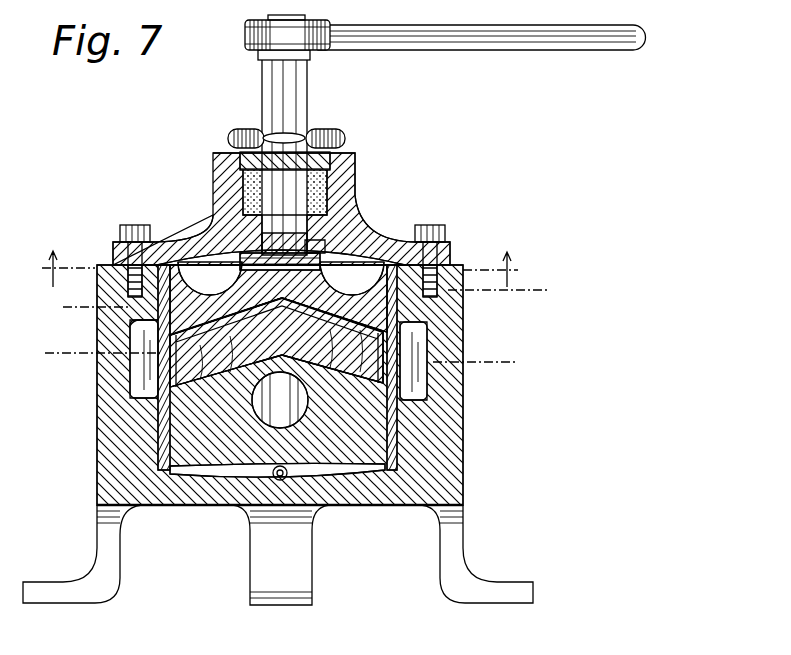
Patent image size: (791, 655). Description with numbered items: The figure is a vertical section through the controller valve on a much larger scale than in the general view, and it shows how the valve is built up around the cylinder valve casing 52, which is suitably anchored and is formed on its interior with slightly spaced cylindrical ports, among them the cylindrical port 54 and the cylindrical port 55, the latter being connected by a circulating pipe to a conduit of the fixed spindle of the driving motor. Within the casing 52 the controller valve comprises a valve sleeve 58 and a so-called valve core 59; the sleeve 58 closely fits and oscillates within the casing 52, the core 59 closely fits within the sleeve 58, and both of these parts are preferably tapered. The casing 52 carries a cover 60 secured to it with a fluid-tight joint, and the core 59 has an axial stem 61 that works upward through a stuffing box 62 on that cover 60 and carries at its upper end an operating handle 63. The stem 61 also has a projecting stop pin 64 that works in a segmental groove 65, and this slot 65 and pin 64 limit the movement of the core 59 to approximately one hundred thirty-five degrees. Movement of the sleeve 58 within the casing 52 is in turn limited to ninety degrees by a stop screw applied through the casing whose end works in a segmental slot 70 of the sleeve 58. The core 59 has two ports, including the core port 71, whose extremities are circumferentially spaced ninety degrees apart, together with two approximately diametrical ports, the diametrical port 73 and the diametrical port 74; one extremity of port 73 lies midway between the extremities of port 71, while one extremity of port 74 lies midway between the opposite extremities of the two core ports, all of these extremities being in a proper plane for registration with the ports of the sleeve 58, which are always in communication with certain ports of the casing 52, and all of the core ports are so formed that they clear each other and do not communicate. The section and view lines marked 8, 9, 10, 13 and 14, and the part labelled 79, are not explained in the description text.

The section line 8- 8 is at (277, 270).
The section line 9- 9 is at (93, 355).
The section line 10- 10 is at (85, 309).
The section line 13- 13 is at (488, 367).
The section line 14- 14 is at (514, 297).
The cylinder valve casing 52 is at (440, 490).
The cylindrical port 54 is at (137, 370).
The cylindrical port 55 is at (417, 382).
The valve sleeve 58 is at (165, 412).
The valve core 59 is at (215, 443).
The cover 60 is at (350, 212).
The axial stem 61 is at (313, 152).
The stuffing box 62 is at (228, 138).
The operating handle 63 is at (508, 42).
The stop pin 64 is at (287, 187).
The segmental groove 65 is at (330, 241).
The segmental slot 70 is at (130, 326).
The core port 71 is at (205, 290).
The diametrical port 73 is at (276, 342).
The diametrical port 74 is at (280, 400).
The valve disc 79 is at (292, 266).